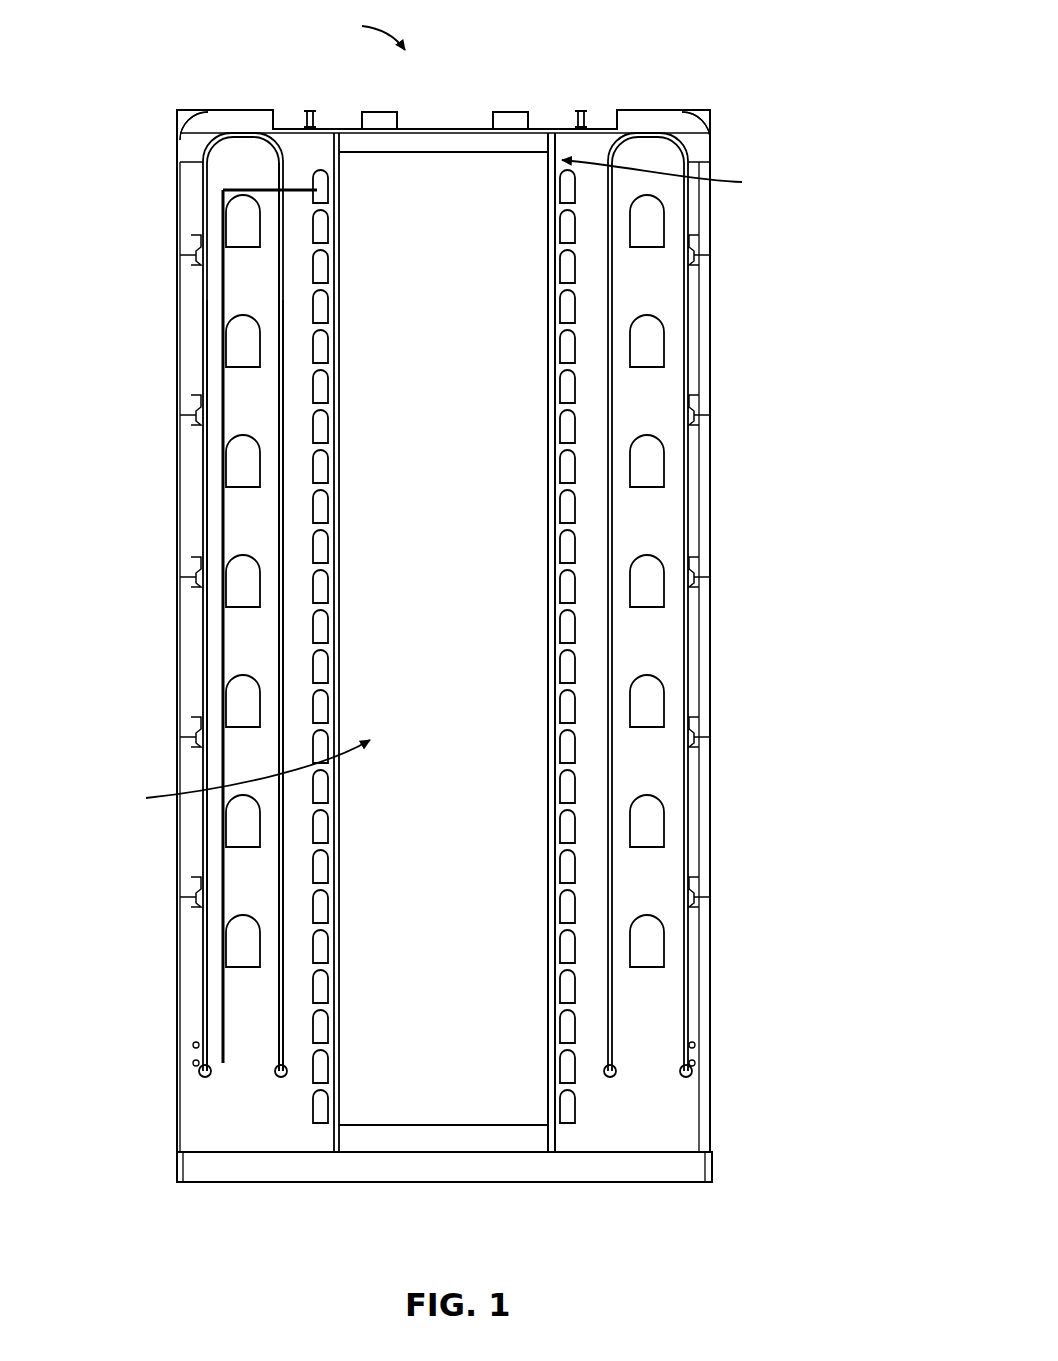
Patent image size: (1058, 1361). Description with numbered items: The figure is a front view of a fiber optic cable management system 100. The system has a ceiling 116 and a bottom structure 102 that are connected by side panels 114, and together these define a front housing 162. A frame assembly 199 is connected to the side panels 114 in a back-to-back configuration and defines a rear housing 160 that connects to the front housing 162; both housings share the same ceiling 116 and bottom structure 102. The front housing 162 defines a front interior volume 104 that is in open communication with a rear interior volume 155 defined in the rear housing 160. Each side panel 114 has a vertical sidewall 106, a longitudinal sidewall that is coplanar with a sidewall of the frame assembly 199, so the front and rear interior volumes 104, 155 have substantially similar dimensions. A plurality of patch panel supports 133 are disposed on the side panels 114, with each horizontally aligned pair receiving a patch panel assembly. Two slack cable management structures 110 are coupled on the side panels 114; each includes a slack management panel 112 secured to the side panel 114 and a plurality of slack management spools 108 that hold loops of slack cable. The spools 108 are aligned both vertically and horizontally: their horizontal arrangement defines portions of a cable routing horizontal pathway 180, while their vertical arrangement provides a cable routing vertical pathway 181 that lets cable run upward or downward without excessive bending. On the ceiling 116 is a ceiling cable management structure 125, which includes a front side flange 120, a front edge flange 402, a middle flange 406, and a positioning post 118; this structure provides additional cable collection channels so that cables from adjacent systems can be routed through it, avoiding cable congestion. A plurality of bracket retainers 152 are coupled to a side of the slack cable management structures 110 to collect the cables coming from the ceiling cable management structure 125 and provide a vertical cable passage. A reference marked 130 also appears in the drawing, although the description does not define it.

The fiber optic cable management system 100 is at (723, 38).
The bottom structure 102 is at (688, 1160).
The front interior volume 104 is at (456, 511).
The vertical sidewall 106 is at (548, 290).
The slack management spool 108 is at (245, 462).
The slack cable management structure 110 is at (220, 190).
The slack management panel 112 is at (215, 348).
The side panel 114 is at (295, 398).
The ceiling 116 is at (357, 129).
The positioning post 118 is at (304, 110).
The front side flange 120 is at (515, 112).
The ceiling cable management structure 125 is at (362, 31).
The return line 130 is at (302, 622).
The patch panel support 133 is at (565, 308).
The bracket retainer 152 is at (195, 562).
The rear interior volume 155 is at (513, 382).
The rear housing 160 is at (690, 113).
The front housing 162 is at (443, 488).
The cable routing horizontal pathway 180 is at (293, 200).
The cable routing vertical pathway 181 is at (228, 280).
The frame assembly 199 is at (553, 213).
The front edge flange 402 is at (207, 128).
The middle flange 406 is at (188, 128).